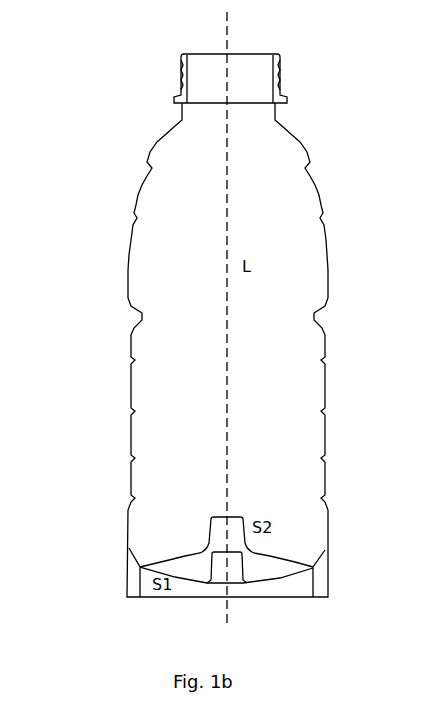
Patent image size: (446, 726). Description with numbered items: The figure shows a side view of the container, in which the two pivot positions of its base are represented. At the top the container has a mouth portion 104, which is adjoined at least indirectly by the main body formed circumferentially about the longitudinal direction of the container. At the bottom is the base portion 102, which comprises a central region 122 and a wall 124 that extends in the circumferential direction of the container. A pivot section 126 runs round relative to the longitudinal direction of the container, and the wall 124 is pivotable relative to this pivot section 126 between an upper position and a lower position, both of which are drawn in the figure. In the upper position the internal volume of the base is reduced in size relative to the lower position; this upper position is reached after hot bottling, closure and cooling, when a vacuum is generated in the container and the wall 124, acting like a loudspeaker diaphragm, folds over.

The base portion 102 is at (127, 528).
The mouth portion 104 is at (178, 90).
The central region 122 is at (205, 538).
The wall 124 is at (172, 557).
The pivot section 126 is at (140, 567).